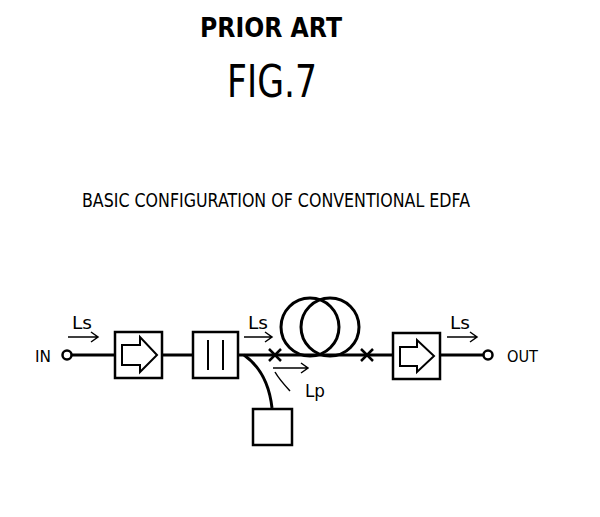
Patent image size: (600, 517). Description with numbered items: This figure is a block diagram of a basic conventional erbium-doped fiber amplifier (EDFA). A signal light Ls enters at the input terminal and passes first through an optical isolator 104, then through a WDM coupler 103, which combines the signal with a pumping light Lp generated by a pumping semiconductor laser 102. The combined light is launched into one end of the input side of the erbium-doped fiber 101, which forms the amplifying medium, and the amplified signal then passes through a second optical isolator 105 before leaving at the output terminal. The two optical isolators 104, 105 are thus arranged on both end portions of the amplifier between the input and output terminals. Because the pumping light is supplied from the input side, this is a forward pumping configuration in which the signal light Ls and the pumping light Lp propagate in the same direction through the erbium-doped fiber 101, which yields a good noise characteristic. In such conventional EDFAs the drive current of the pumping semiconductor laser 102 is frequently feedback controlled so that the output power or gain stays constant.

The erbium-doped fiber 101 is at (292, 306).
The pumping semiconductor laser 102 is at (270, 445).
The WDM coupler 103 is at (213, 332).
The optical isolator 104 is at (138, 332).
The optical isolator 105 is at (415, 333).